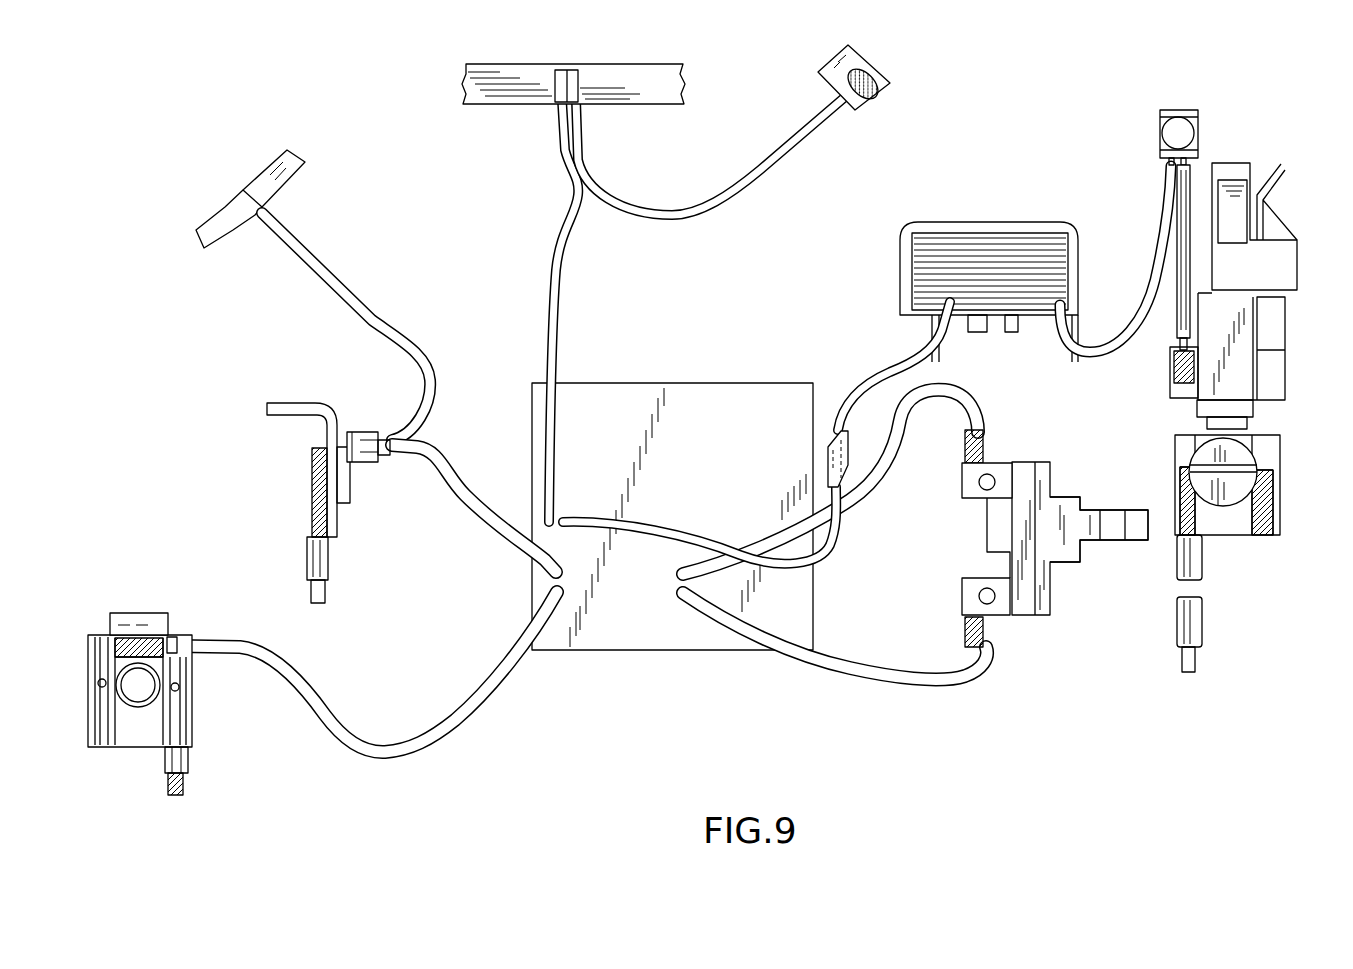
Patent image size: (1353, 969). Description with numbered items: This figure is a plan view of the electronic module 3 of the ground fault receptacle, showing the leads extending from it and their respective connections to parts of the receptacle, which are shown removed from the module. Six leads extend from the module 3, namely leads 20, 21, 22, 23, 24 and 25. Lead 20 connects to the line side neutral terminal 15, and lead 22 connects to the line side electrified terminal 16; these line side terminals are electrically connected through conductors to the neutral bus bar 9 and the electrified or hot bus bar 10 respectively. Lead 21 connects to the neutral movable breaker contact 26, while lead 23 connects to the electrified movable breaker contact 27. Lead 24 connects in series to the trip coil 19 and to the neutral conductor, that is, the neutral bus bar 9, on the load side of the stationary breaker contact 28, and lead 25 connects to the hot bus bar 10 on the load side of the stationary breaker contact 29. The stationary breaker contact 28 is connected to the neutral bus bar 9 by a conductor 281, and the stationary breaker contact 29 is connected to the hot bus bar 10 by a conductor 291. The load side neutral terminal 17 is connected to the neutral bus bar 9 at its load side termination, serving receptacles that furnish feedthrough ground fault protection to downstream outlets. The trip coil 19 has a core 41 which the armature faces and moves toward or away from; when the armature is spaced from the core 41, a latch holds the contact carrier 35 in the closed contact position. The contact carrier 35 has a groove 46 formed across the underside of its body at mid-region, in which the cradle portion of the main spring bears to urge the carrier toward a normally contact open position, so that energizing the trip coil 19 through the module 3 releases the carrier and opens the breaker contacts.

The electronic module 3 is at (652, 634).
The neutral bus bar 9 is at (1240, 370).
The electrified bus bar 10 is at (507, 96).
The line side neutral terminal 15 is at (330, 508).
The line side electrified terminal 16 is at (132, 733).
The load side neutral terminal 17 is at (1247, 458).
The trip coil 19 is at (963, 240).
The lead 20 is at (440, 457).
The lead 21 is at (857, 498).
The lead 22 is at (473, 710).
The lead 23 is at (900, 677).
The lead 24 is at (1120, 357).
The lead 25 is at (554, 244).
The neutral movable breaker contact 26 is at (990, 480).
The electrified movable breaker contact 27 is at (990, 600).
The stationary breaker contact 28 is at (1160, 133).
The stationary breaker contact 29 is at (876, 64).
The contact carrier 35 is at (1037, 548).
The core 41 is at (993, 318).
The groove 46 is at (1060, 520).
The conductor 281 is at (1185, 203).
The conductor 291 is at (748, 194).